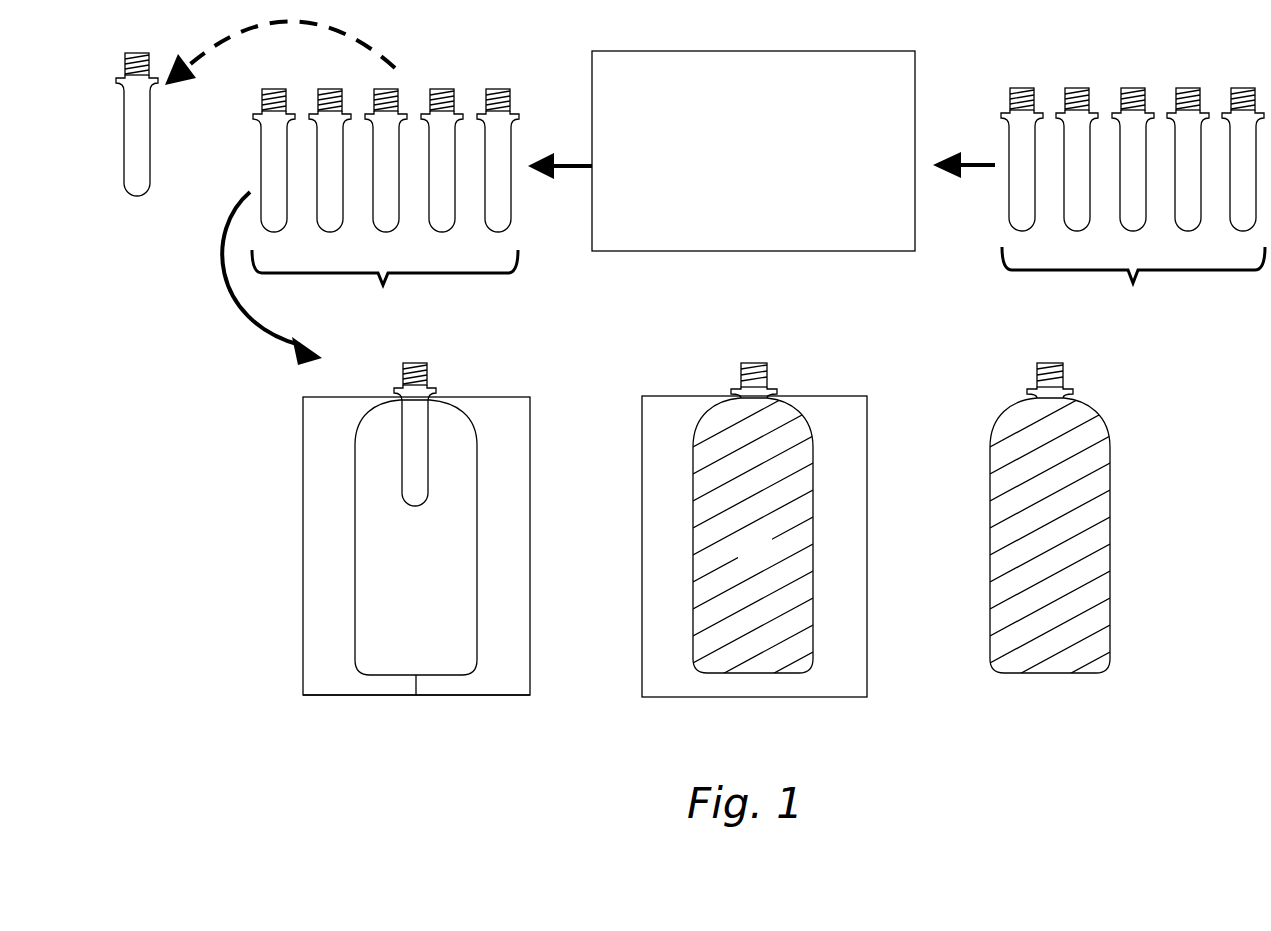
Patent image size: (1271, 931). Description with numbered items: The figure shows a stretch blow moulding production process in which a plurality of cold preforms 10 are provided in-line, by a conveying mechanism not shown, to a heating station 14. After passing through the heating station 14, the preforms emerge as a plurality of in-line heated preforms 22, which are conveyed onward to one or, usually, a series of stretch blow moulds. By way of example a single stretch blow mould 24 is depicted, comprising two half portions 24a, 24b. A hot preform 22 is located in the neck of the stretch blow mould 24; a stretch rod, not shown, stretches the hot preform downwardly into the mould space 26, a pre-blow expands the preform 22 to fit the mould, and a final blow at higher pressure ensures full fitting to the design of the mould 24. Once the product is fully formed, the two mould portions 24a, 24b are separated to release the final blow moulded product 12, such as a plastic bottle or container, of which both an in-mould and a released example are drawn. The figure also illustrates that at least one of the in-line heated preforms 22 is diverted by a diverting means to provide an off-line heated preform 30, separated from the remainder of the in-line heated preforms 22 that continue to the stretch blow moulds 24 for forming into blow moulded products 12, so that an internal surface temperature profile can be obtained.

The cold preforms 10 is at (1140, 273).
The blow moulded products 12 is at (770, 561).
The heating station 14 is at (773, 167).
The in-line heated preforms 22 is at (390, 276).
The stretch blow mould 24 is at (304, 724).
The mould half portion 24a is at (360, 696).
The mould half portion 24b is at (482, 696).
The mould space 26 is at (433, 634).
The off-line heated preform 30 is at (136, 196).